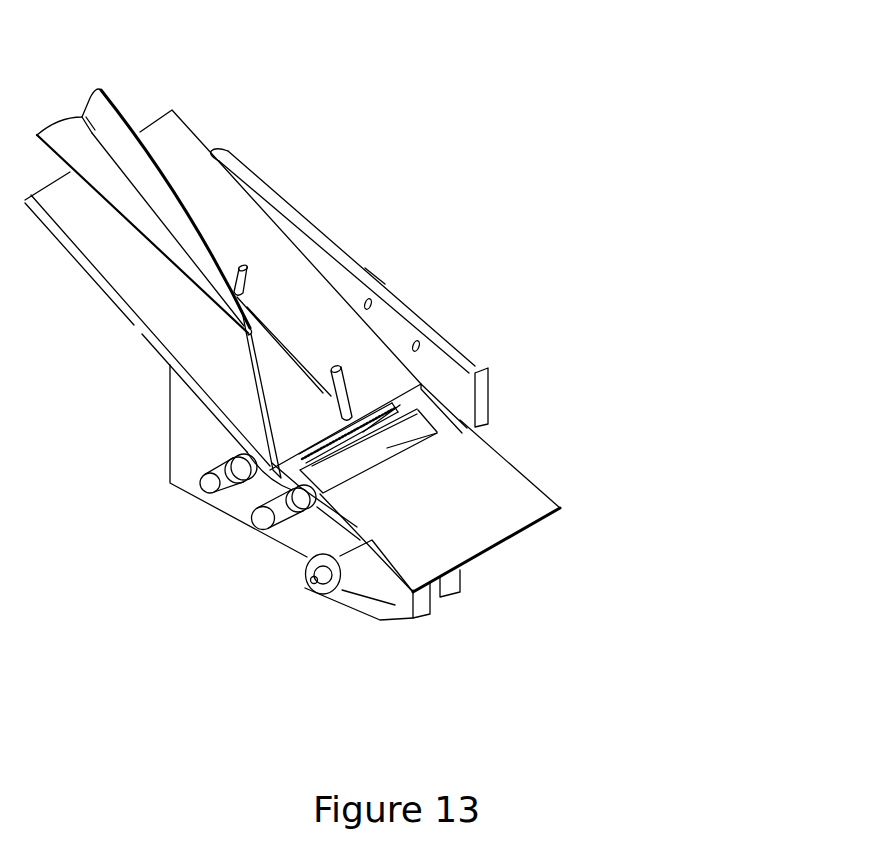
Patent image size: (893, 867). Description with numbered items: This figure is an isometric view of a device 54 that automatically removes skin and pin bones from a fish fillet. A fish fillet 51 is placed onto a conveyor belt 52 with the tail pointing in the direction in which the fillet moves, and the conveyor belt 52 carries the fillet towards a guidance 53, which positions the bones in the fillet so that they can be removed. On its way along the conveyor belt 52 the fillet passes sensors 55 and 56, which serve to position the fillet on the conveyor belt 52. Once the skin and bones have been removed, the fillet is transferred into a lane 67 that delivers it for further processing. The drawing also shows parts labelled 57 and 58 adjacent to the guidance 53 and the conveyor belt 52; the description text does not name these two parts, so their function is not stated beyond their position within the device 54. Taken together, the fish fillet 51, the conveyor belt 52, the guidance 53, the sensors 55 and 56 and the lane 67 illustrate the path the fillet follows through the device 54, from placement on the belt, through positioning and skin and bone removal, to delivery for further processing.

The fish fillet 51 is at (150, 197).
The conveyor belt 52 is at (238, 235).
The guidance 53 is at (283, 338).
The device 54 is at (375, 273).
The sensor 55 is at (371, 302).
The sensor 56 is at (419, 344).
The end cap 57 is at (488, 371).
The tray with screen 58 is at (437, 425).
The lane 67 is at (440, 498).